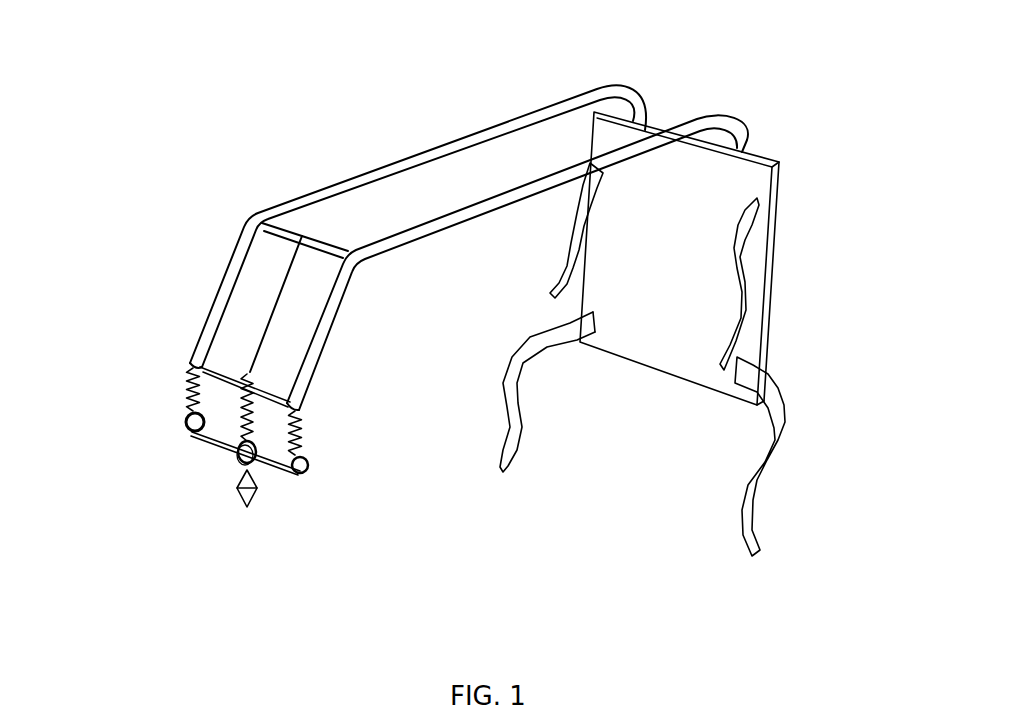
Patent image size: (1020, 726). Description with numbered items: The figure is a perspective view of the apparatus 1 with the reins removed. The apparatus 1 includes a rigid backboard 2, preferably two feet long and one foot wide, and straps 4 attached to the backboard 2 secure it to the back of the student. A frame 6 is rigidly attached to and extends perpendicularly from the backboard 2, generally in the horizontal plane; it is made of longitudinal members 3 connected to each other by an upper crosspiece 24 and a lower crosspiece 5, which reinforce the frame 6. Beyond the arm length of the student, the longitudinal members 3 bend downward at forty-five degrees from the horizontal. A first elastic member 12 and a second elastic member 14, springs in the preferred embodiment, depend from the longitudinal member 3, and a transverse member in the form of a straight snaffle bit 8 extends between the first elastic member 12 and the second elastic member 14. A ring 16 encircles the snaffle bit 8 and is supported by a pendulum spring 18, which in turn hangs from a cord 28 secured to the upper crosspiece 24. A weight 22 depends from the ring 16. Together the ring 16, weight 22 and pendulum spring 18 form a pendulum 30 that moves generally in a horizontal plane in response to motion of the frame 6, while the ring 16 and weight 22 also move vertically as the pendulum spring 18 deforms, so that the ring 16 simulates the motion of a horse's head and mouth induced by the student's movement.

The apparatus 1 is at (433, 539).
The backboard 2 is at (780, 166).
The longitudinal members 3 is at (469, 225).
The straps 4 is at (709, 359).
The lower crosspiece 5 is at (220, 371).
The frame 6 is at (350, 130).
The snaffle bit 8 is at (283, 476).
The first elastic member 12 is at (188, 383).
The second elastic member 14 is at (307, 433).
The ring 16 is at (238, 459).
The pendulum spring 18 is at (243, 417).
The weight 22 is at (243, 494).
The upper crosspiece 24 is at (290, 226).
The cord 28 is at (278, 297).
The pendulum 30 is at (137, 502).